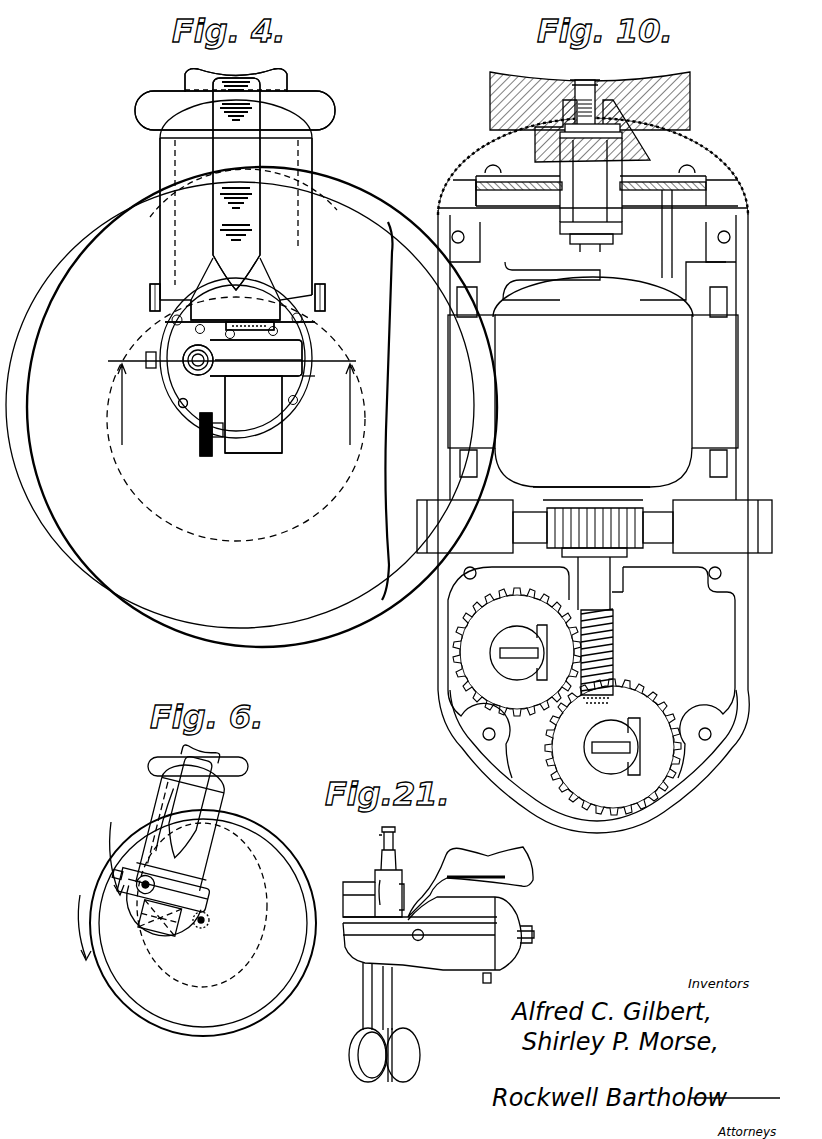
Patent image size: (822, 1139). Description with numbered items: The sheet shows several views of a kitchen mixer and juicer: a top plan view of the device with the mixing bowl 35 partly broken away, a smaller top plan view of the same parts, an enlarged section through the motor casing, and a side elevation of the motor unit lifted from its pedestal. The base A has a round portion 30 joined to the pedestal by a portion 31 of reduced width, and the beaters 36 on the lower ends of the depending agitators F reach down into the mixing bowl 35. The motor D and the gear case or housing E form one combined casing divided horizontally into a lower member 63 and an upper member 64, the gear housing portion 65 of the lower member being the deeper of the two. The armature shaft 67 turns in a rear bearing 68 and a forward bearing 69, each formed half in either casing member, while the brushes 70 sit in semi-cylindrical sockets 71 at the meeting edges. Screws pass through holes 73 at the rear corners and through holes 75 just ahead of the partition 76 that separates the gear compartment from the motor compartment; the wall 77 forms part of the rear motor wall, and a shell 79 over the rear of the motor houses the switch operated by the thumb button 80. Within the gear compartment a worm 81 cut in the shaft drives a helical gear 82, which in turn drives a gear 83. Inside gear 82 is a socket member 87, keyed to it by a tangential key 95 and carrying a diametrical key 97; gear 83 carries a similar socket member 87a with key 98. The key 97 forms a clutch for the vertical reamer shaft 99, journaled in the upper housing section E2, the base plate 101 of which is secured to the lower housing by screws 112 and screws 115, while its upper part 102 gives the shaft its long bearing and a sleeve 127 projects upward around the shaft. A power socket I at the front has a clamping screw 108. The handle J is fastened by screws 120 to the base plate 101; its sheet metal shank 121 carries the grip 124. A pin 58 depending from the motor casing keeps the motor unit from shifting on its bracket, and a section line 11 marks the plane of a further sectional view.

In FIG. 4, the round portion 30 is at (382, 411).
In FIG. 4, the portion of reduced width 31 is at (333, 207).
In FIG. 4, the mixing bowl 35 is at (48, 292).
In FIG. 6, the mixing bowl 35 is at (118, 848).
In FIG. 21, the beaters 36 is at (349, 1060).
In FIG. 21, the pin 58 is at (483, 978).
In FIG. 10, the lower member of the combined motor and gear case 63 is at (740, 467).
In FIG. 4, the upper member of the combined motor and gear case 64 is at (288, 259).
In FIG. 10, the gear housing portion 65 is at (726, 676).
In FIG. 10, the armature shaft 67 is at (598, 208).
In FIG. 10, the bearing 68 is at (570, 180).
In FIG. 10, the bearing 69 is at (627, 592).
In FIG. 4, the brushes 70 is at (152, 291).
In FIG. 10, the brushes 70 is at (482, 539).
In FIG. 10, the semi-cylindrical sockets 71 is at (463, 566).
In FIG. 10, the holes 73 is at (452, 232).
In FIG. 10, the holes 75 is at (467, 578).
In FIG. 10, the partition 76 is at (673, 561).
In FIG. 10, the wall 77 is at (525, 213).
In FIG. 4, the shell-like member 79 is at (278, 110).
In FIG. 10, the shell-like member 79 is at (696, 148).
In FIG. 4, the thumb button 80 is at (193, 76).
In FIG. 10, the thumb button 80 is at (503, 73).
In FIG. 10, the worm 81 is at (613, 658).
In FIG. 10, the gear 82 is at (465, 663).
In FIG. 10, the gear 83 is at (640, 790).
In FIG. 10, the socket member 87 is at (507, 642).
In FIG. 10, the socket member 87a is at (597, 734).
In FIG. 10, the tangential key 95 is at (542, 677).
In FIG. 10, the diametrical rib or key 97 is at (517, 650).
In FIG. 10, the rib or key 98 is at (610, 750).
In FIG. 4, the reamer shaft 99 is at (192, 358).
In FIG. 21, the reamer shaft 99 is at (394, 830).
In FIG. 4, the base plate 101 is at (300, 388).
In FIG. 4, the upper part 102 is at (270, 406).
In FIG. 4, the clamping screw 108 is at (204, 450).
In FIG. 4, the screws 112 is at (180, 404).
In FIG. 4, the screws 115 is at (172, 321).
In FIG. 4, the screws 120 is at (272, 326).
In FIG. 4, the sheet metal plate 121 is at (210, 298).
In FIG. 4, the grip or handle member proper 124 is at (220, 148).
In FIG. 21, the sleeve 127 is at (392, 857).
In FIG. 4, the section line 11- 11 is at (232, 416).
In FIG. 4, the base A is at (152, 492).
In FIG. 6, the base A is at (218, 981).
In FIG. 4, the motor D is at (309, 180).
In FIG. 6, the motor D is at (212, 835).
In FIG. 21, the motor D is at (438, 933).
In FIG. 21, the gear case or housing E is at (346, 930).
In FIG. 4, the upper section of the gear housing E2 is at (296, 347).
In FIG. 6, the upper section of the gear housing E2 is at (205, 899).
In FIG. 21, the depending agitators F is at (363, 987).
In FIG. 4, the power socket I is at (254, 446).
In FIG. 6, the power socket I is at (172, 938).
In FIG. 21, the power socket I is at (350, 886).
In FIG. 4, the handle member J is at (247, 160).
In FIG. 6, the handle member J is at (198, 793).
In FIG. 21, the handle member J is at (473, 857).